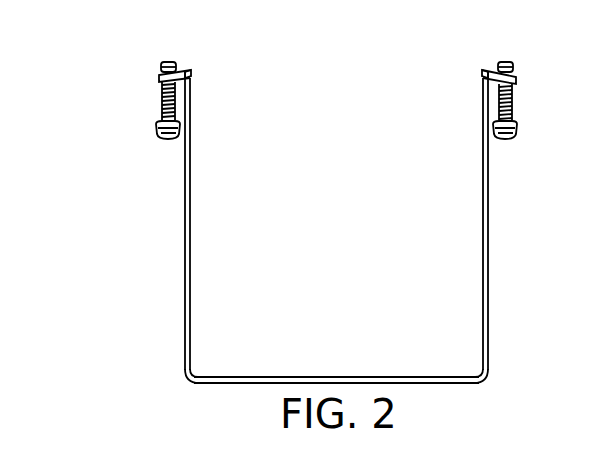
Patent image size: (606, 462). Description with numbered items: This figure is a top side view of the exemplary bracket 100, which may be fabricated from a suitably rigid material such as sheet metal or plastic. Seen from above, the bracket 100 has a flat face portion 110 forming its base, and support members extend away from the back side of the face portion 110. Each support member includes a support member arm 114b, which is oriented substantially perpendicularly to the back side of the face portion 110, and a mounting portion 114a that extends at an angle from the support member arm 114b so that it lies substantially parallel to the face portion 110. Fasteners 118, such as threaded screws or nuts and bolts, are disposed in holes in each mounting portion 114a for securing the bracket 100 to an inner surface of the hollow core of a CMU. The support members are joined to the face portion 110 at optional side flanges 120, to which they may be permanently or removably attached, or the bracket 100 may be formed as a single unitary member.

The bracket 100 is at (126, 58).
The face portion 110 is at (220, 384).
The mounting portion 114a is at (181, 70).
The support member arm 114b is at (185, 232).
The fastener 118 is at (508, 63).
The side flange 120 is at (185, 355).